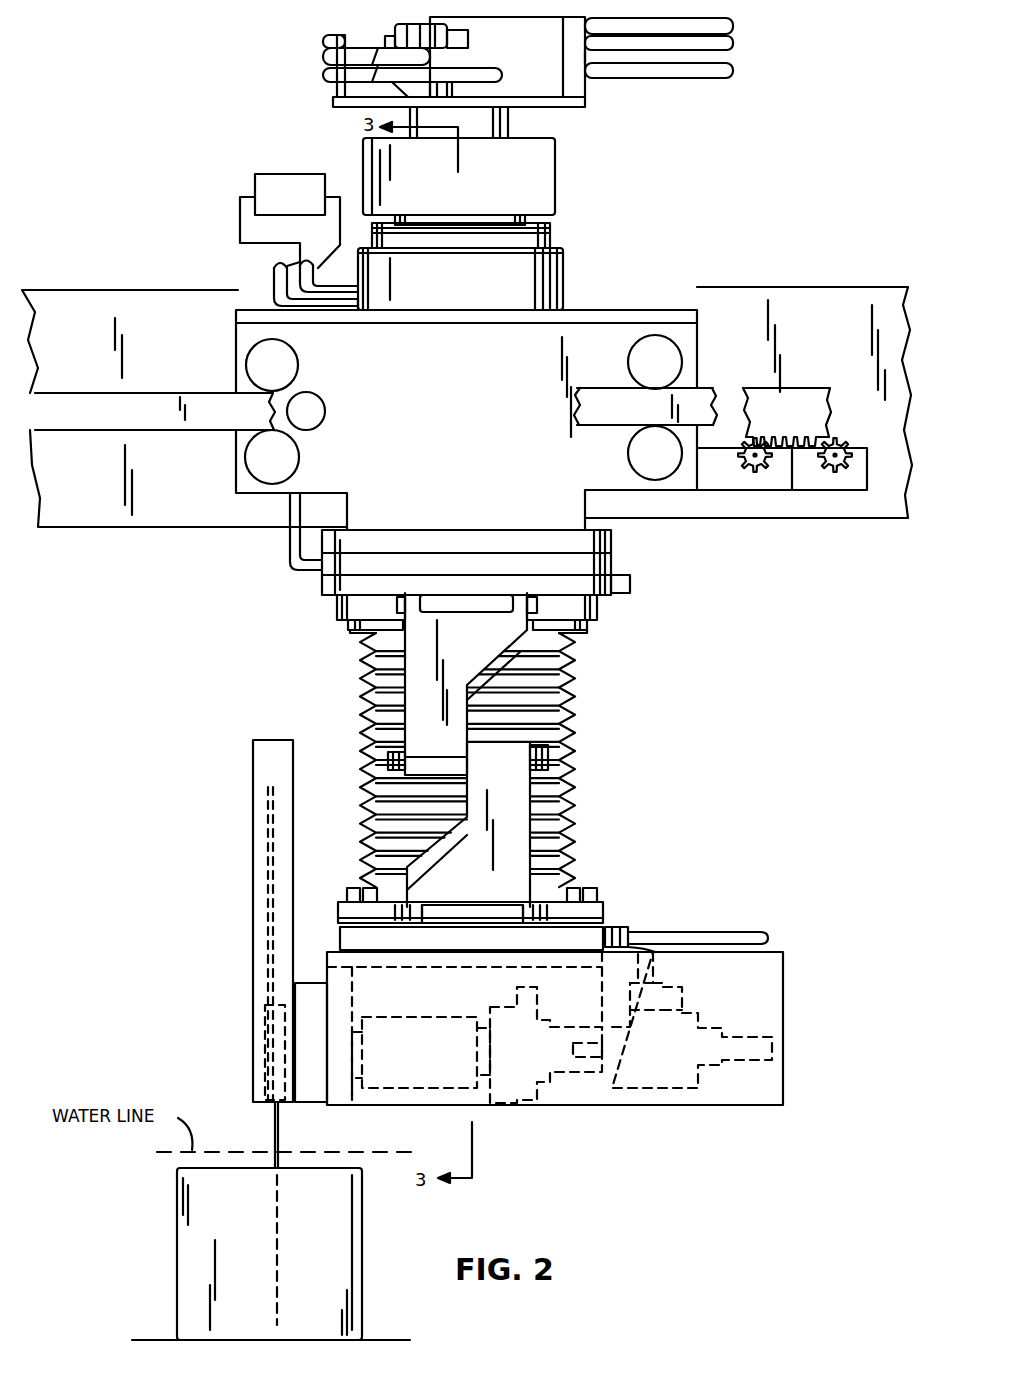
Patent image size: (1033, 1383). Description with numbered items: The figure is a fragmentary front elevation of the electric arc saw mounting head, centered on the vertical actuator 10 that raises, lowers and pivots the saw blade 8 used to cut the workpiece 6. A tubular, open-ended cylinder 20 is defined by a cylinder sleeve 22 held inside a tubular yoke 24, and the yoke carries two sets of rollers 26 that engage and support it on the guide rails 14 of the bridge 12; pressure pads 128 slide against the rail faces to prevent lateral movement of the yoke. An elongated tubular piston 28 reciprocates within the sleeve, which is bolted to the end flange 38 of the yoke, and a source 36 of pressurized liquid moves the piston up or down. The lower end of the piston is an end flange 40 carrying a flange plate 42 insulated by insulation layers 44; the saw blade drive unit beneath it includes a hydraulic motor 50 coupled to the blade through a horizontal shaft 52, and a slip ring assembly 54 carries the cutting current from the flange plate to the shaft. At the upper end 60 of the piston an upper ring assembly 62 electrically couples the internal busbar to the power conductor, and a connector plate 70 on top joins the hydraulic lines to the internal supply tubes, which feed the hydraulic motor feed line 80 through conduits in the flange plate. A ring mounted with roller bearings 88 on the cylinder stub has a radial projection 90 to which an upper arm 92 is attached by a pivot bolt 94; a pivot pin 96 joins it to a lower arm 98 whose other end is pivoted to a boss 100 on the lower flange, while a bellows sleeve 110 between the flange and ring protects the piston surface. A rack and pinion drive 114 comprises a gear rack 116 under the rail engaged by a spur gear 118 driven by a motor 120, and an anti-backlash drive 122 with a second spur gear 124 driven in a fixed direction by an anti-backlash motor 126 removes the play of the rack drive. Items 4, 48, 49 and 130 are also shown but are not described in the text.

The base 4 is at (372, 1338).
The workpiece 6 is at (356, 1220).
The saw blade 8 is at (279, 1140).
The vertical actuator 10 is at (724, 245).
The bridge 12 is at (50, 343).
The guide rails 14 is at (52, 416).
The cylinder 20 is at (572, 275).
The cylinder sleeve 22 is at (565, 263).
The yoke 24 is at (610, 325).
The rollers 26 is at (288, 362).
The piston 28 is at (545, 242).
The source of pressurized liquid 36 is at (285, 173).
The end flange 38 is at (612, 550).
The end flange 40 is at (605, 905).
The flange plate 42 is at (358, 940).
The insulation layers 44 is at (605, 920).
The drive housing 48 is at (632, 1108).
The column 49 is at (295, 815).
The hydraulic motor 50 is at (665, 1088).
The horizontal shaft 52 is at (373, 1105).
The slip ring assembly 54 is at (510, 1105).
The upper end of the piston 60 is at (548, 226).
The upper ring assembly 62 is at (566, 165).
The connector plate 70 is at (583, 104).
The hydraulic motor feed line 80 is at (705, 930).
The roller bearings 88 is at (597, 620).
The radial projection 90 is at (477, 595).
The upper arm 92 is at (488, 650).
The pivot bolt 94 is at (540, 603).
The pivot pin 96 is at (547, 741).
The lower arm 98 is at (525, 820).
The boss 100 is at (448, 912).
The bellows sleeve 110 is at (576, 785).
The rack and pinion drive 114 is at (778, 426).
The gear rack 116 is at (790, 432).
The spur gear 118 is at (743, 466).
The motor 120 is at (775, 478).
The anti-backlash drive 122 is at (847, 428).
The second spur gear 124 is at (812, 464).
The anti-backlash motor 126 is at (855, 480).
The pressure pads 128 is at (322, 400).
The rail 130 is at (152, 417).